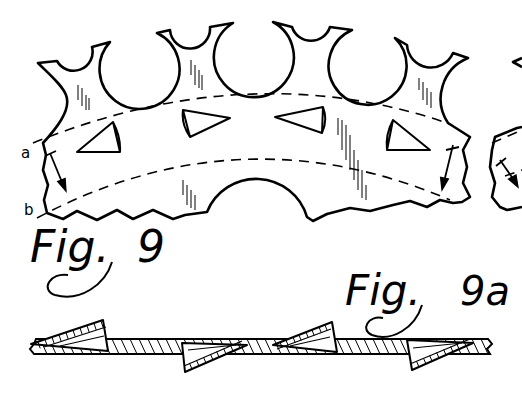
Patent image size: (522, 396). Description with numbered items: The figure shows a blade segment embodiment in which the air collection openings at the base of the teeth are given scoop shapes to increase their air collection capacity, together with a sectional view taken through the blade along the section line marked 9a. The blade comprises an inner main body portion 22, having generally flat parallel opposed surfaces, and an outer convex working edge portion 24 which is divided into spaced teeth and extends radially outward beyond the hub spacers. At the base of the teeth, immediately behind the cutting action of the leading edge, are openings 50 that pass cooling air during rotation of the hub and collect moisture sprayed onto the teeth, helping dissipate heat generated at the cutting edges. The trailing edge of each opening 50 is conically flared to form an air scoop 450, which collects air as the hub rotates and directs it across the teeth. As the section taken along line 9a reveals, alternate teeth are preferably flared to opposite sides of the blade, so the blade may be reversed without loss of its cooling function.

In FIG. 9, the inner main body portion 22 is at (323, 197).
In FIG. 9, the outer working edge portion 24 is at (280, 151).
In FIG. 9A, the outer working edge portion 24 is at (150, 356).
In FIG. 9, the openings 50 is at (185, 116).
In FIG. 9A, the openings 50 is at (197, 343).
In FIG. 9, the air scoop 450 is at (393, 122).
In FIG. 9A, the air scoop 450 is at (420, 362).
In FIG. 9, the section line 9a- 9a is at (252, 168).